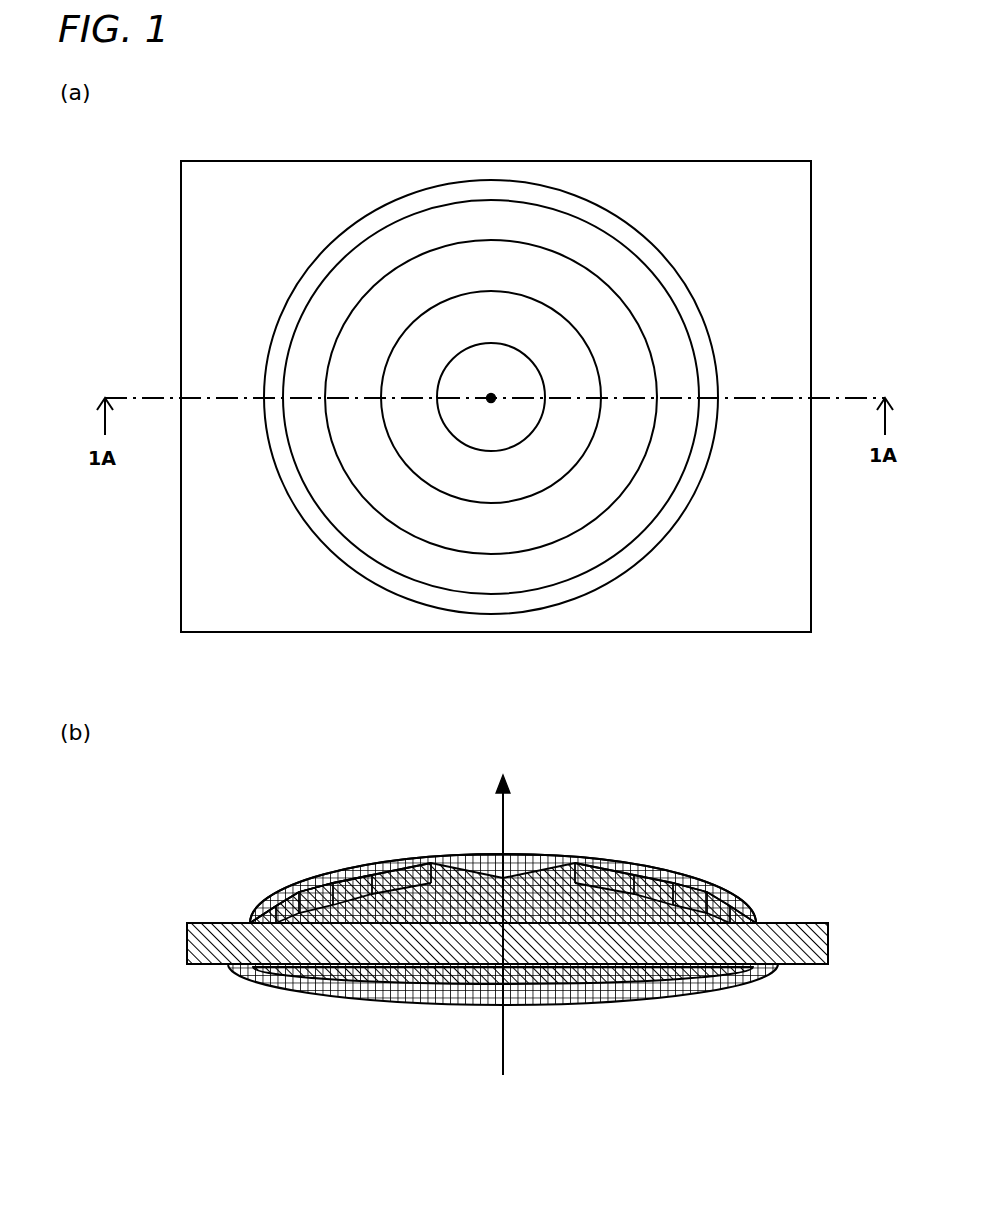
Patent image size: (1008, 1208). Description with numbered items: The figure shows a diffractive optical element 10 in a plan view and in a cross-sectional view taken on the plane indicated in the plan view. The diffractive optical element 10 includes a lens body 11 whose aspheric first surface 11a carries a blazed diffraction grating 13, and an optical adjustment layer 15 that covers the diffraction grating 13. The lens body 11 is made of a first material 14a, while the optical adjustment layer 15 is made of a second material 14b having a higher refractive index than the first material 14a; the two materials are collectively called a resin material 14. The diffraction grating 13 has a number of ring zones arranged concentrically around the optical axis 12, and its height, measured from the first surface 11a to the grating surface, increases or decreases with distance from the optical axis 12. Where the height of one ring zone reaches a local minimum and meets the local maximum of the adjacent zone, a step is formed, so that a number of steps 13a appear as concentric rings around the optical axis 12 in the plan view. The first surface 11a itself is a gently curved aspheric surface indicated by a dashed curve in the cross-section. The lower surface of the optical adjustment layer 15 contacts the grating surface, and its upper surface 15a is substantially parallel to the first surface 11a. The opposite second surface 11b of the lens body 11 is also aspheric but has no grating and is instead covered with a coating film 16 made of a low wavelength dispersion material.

The diffractive optical element 10 is at (141, 112).
The lens body 11 is at (682, 220).
The first surface 11a is at (700, 893).
The second surface 11b is at (680, 980).
The optical axis 12 is at (491, 398).
The diffraction grating 13 is at (447, 181).
The steps 13a is at (510, 293).
The resin material 14 is at (197, 805).
The first material 14a is at (269, 912).
The second material 14b is at (313, 881).
The optical adjustment layer 15 is at (593, 875).
The upper surface 15a is at (735, 893).
The coating film 16 is at (583, 992).